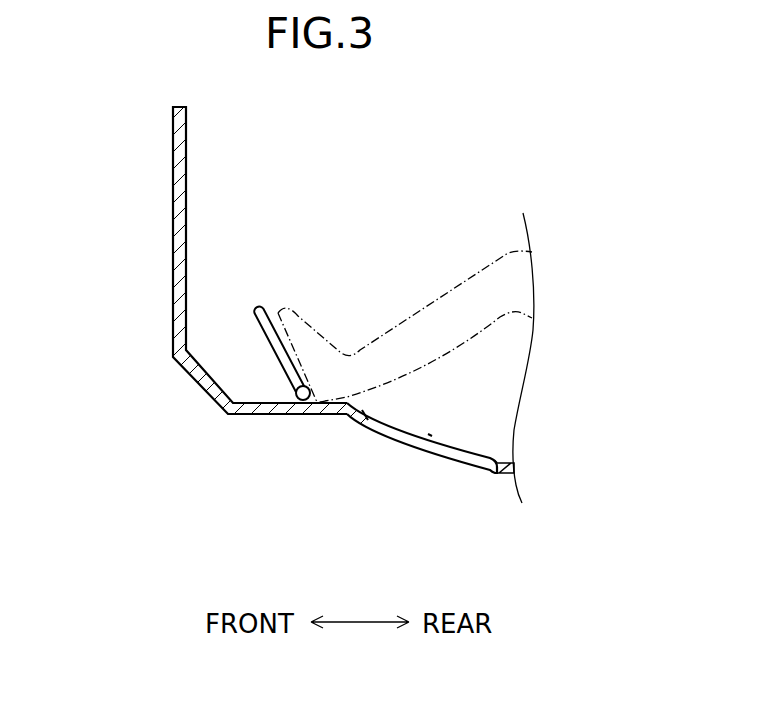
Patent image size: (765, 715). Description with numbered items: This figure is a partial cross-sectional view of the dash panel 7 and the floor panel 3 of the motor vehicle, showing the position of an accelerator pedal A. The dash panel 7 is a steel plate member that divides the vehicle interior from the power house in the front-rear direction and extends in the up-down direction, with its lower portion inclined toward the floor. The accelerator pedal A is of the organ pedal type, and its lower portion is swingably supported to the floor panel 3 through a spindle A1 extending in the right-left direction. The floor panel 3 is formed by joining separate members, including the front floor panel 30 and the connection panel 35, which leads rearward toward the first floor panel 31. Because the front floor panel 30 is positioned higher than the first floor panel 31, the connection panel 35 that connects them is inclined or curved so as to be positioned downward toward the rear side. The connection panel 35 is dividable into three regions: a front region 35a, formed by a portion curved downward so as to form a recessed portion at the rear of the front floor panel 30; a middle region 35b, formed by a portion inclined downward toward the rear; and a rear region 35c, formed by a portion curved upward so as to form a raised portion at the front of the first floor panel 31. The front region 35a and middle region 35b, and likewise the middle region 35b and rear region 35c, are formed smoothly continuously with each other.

The dash panel 7 is at (173, 210).
The connection panel 35 is at (383, 433).
The front region 35a is at (366, 416).
The middle region 35b is at (431, 437).
The rear region 35c is at (497, 462).
The first floor panel 31 is at (507, 477).
The floor panel 3 is at (448, 458).
The front floor panel 30 is at (315, 414).
The accelerator pedal A is at (270, 347).
The spindle A1 is at (285, 404).